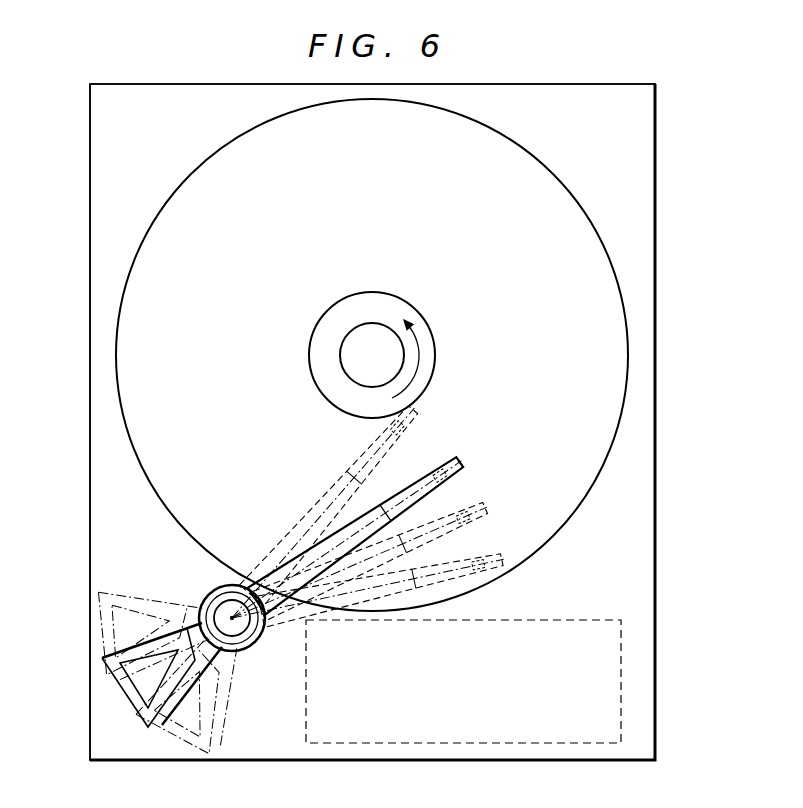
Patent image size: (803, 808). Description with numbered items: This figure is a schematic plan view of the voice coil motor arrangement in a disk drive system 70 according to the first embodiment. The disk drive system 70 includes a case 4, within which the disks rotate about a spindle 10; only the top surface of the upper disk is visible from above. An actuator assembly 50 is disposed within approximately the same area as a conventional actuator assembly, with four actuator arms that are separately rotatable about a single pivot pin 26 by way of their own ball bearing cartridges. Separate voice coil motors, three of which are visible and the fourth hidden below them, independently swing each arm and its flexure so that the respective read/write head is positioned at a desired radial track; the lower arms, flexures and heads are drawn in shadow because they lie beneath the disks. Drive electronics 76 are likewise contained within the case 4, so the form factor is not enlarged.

The case 4 is at (349, 422).
The disk drive system 70 is at (420, 422).
The spindle 10 is at (372, 330).
The actuator assembly 50 is at (141, 599).
The pivot pin 26 is at (210, 595).
The drive electronics 76 is at (463, 659).